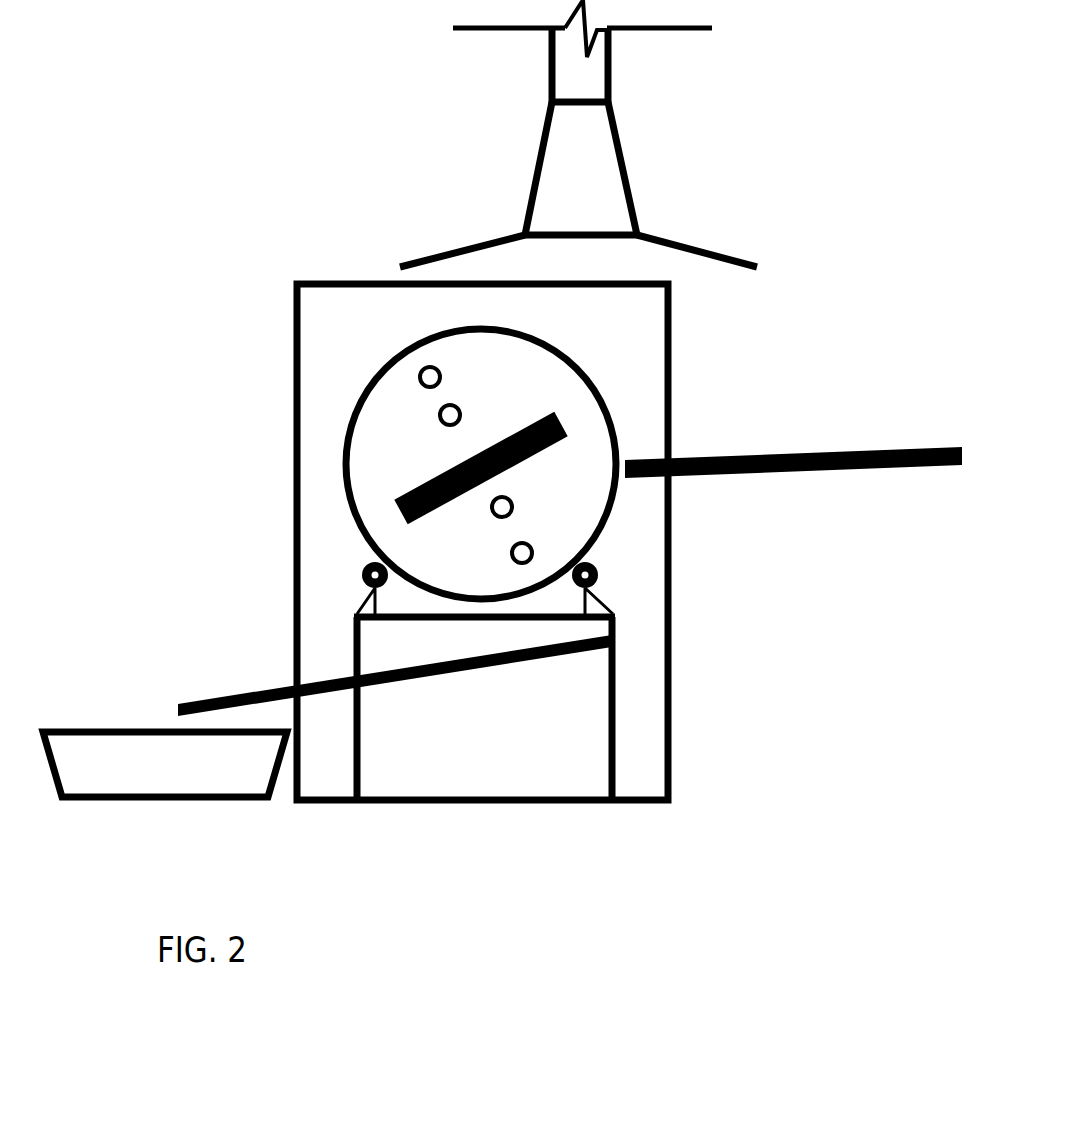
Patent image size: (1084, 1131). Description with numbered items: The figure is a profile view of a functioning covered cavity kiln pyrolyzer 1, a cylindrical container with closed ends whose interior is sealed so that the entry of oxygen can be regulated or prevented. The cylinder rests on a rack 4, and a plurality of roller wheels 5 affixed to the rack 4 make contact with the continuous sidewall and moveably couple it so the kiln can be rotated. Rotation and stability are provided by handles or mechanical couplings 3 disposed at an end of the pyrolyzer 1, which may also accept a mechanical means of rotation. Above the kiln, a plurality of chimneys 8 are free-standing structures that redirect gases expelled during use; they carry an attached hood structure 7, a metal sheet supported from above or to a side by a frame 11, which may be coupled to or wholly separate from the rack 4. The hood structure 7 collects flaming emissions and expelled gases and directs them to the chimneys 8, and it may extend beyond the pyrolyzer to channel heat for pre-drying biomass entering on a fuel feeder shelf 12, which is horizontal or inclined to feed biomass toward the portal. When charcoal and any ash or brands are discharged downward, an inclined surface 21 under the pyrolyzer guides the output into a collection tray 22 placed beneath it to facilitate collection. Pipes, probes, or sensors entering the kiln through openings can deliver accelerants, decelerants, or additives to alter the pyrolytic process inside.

The covered cavity kiln pyrolyzer 1 is at (818, 886).
The handles or mechanical couplings 3 is at (408, 478).
The rack 4 is at (622, 707).
The roller wheels 5 is at (608, 570).
The hood structure 7 is at (724, 248).
The chimneys 8 is at (520, 177).
The frame 11 is at (288, 337).
The fuel feeder shelf 12 is at (760, 447).
The inclined surface 21 is at (475, 680).
The collection tray 22 is at (148, 720).